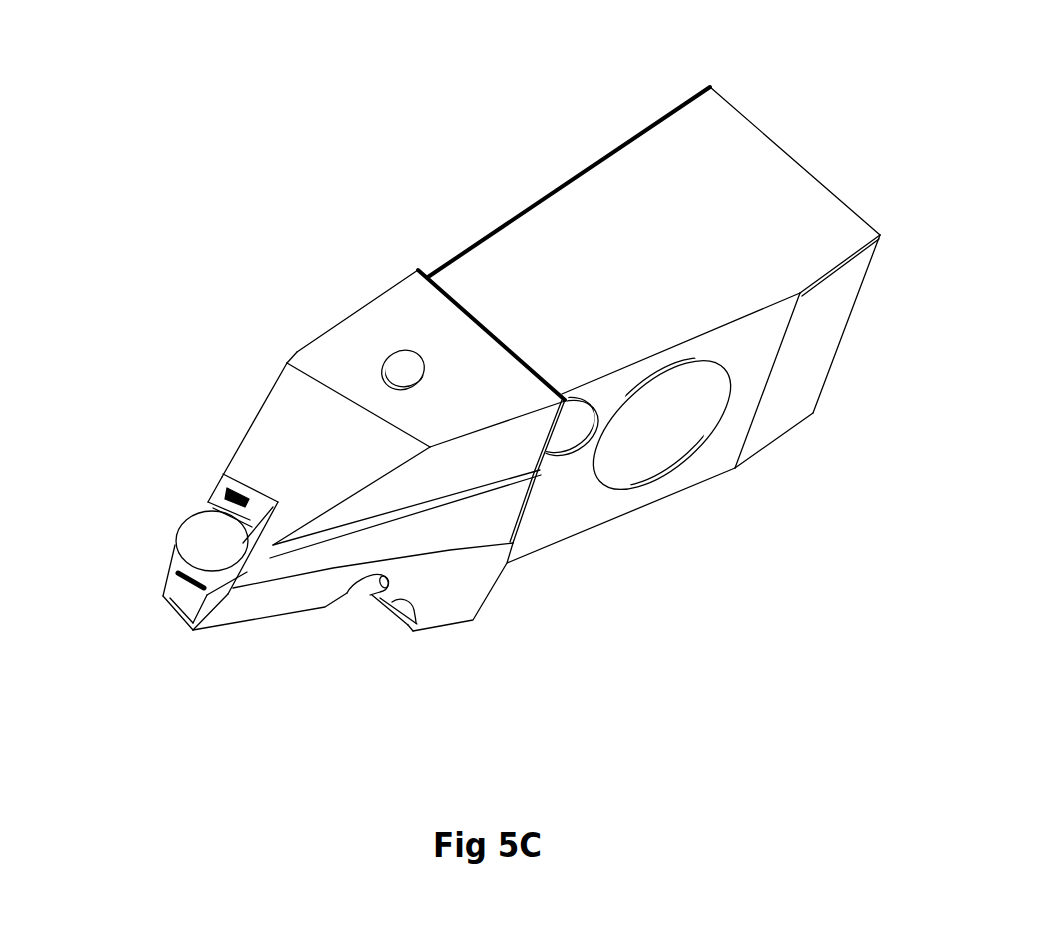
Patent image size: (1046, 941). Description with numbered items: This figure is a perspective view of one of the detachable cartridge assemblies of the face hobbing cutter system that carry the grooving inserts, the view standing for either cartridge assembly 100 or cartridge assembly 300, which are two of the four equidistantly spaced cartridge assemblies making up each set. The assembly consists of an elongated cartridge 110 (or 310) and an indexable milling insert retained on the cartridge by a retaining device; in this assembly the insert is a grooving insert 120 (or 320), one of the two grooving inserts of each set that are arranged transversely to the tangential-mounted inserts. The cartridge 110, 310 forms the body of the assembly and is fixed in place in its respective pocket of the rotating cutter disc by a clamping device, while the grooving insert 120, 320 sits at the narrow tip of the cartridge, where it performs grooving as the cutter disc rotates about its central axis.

The cartridge assembly 100 is at (606, 105).
The cartridge assembly 300 is at (536, 326).
The cartridge 110 is at (350, 330).
The cartridge 310 is at (304, 402).
The grooving insert 120 is at (212, 555).
The grooving insert 320 is at (229, 609).